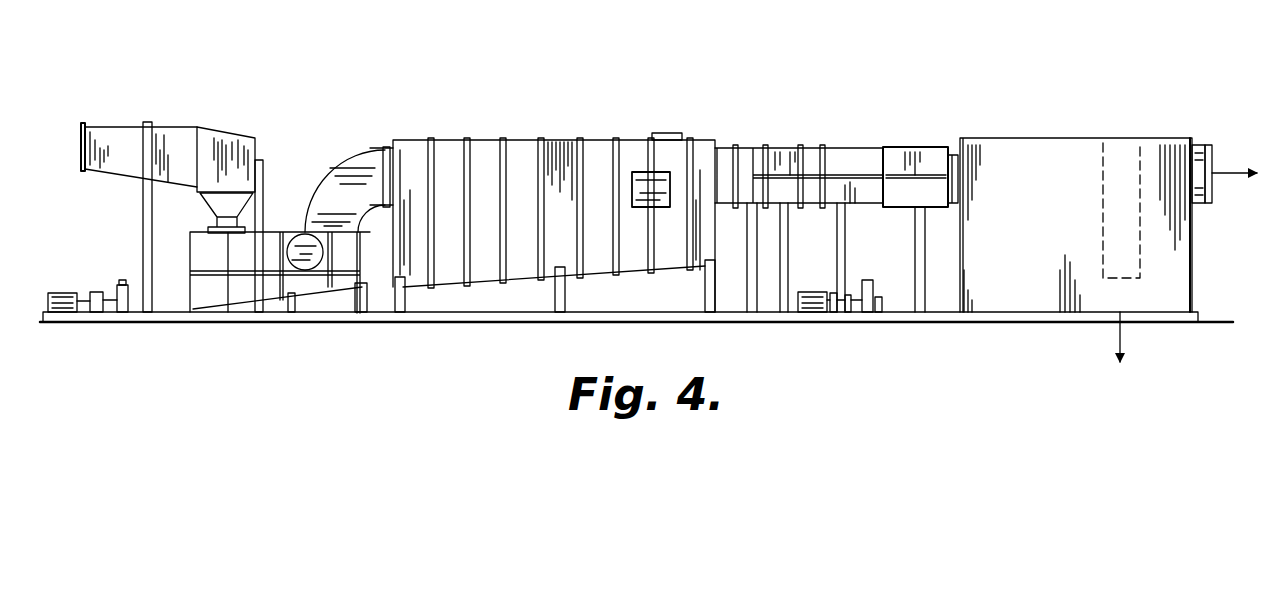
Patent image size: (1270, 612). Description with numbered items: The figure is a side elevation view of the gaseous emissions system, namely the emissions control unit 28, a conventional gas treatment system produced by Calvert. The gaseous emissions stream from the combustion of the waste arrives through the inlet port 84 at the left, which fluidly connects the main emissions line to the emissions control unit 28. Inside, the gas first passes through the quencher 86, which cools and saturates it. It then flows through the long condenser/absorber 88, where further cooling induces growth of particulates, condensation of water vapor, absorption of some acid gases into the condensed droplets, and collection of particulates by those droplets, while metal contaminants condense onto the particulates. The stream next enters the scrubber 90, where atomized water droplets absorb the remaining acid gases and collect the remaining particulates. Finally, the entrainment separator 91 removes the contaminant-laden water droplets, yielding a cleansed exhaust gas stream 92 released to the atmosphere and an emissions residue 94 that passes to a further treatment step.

The inlet port 84 is at (83, 123).
The quencher 86 is at (227, 137).
The condenser/absorber 88 is at (485, 148).
The emissions control unit 28 is at (705, 138).
The scrubber 90 is at (848, 157).
The entrainment separator 91 is at (1038, 150).
The cleansed exhaust gas stream 92 is at (1222, 170).
The emissions residue 94 is at (1122, 323).